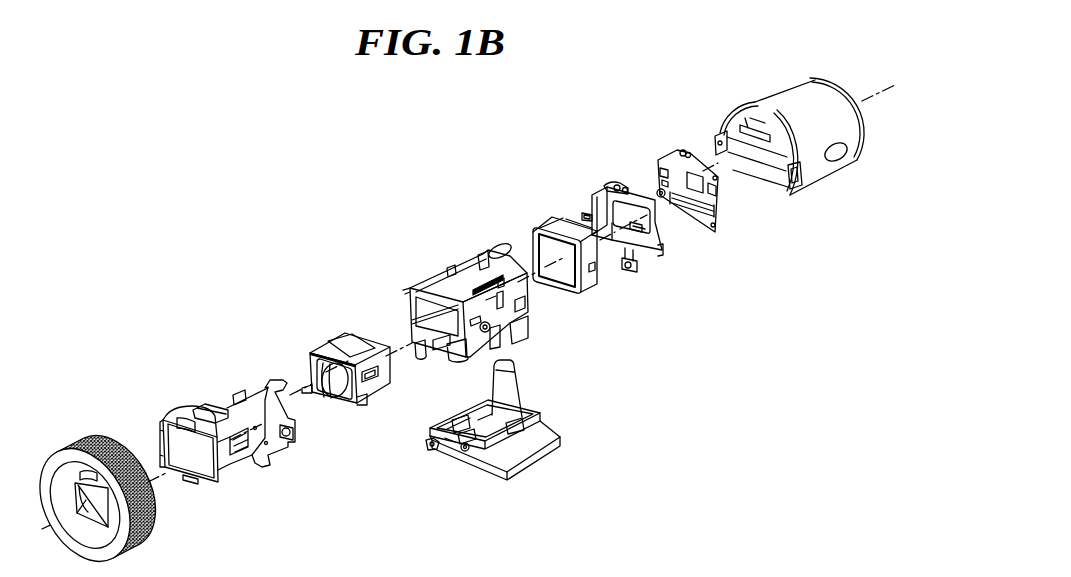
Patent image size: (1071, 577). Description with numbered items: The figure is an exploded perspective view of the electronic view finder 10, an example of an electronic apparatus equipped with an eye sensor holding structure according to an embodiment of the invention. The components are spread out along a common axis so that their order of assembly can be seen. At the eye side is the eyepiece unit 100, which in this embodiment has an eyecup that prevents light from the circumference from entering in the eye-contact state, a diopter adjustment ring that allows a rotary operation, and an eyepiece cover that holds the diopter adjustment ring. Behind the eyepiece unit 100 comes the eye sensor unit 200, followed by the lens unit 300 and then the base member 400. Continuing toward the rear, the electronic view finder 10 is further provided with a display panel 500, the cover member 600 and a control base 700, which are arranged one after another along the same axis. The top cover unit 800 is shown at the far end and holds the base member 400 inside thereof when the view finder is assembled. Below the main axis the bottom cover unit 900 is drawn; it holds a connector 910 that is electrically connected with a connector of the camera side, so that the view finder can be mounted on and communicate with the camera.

The electronic view finder 10 is at (262, 196).
The eyepiece unit 100 is at (100, 440).
The eye sensor unit 200 is at (205, 400).
The lens unit 300 is at (333, 332).
The base member 400 is at (445, 268).
The display panel 500 is at (543, 223).
The cover member 600 is at (610, 185).
The control base 700 is at (683, 152).
The top cover unit 800 is at (773, 92).
The bottom cover unit 900 is at (552, 432).
The connector 910 is at (522, 467).